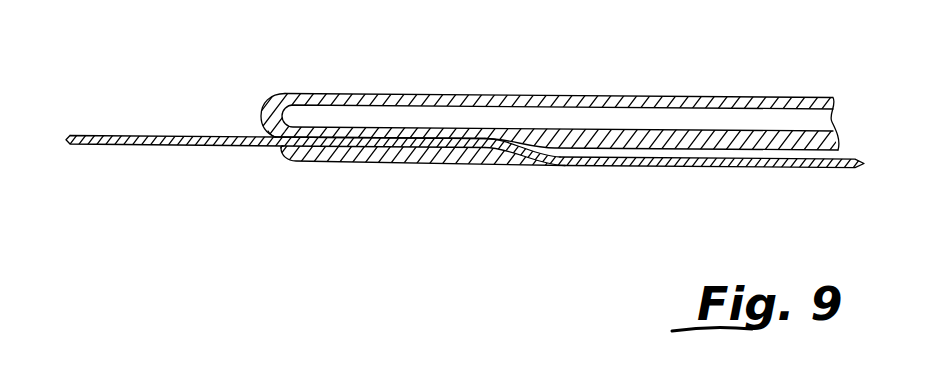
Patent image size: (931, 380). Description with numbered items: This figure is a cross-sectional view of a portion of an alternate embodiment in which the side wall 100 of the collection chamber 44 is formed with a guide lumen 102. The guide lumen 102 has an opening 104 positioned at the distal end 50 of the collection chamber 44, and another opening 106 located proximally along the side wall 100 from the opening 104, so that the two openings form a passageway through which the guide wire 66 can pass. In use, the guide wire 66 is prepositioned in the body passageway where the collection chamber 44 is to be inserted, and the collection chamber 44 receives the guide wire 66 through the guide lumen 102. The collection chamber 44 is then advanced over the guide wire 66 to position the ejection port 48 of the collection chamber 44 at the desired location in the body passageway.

The collection chamber 44 is at (620, 95).
The ejection port 48 is at (407, 93).
The distal end 50 is at (267, 94).
The guide wire 66 is at (143, 137).
The side wall 100 is at (630, 142).
The guide lumen 102 is at (382, 161).
The opening 104 is at (272, 144).
The opening 106 is at (508, 161).